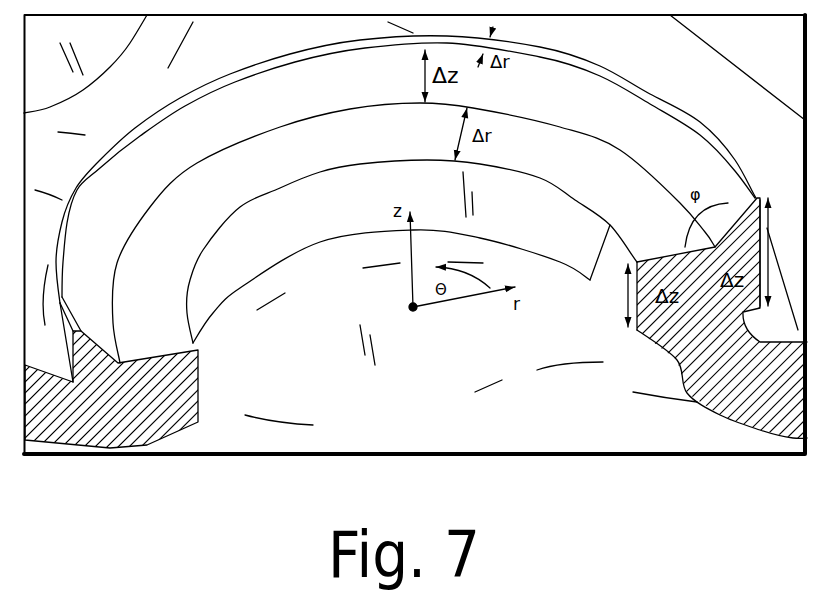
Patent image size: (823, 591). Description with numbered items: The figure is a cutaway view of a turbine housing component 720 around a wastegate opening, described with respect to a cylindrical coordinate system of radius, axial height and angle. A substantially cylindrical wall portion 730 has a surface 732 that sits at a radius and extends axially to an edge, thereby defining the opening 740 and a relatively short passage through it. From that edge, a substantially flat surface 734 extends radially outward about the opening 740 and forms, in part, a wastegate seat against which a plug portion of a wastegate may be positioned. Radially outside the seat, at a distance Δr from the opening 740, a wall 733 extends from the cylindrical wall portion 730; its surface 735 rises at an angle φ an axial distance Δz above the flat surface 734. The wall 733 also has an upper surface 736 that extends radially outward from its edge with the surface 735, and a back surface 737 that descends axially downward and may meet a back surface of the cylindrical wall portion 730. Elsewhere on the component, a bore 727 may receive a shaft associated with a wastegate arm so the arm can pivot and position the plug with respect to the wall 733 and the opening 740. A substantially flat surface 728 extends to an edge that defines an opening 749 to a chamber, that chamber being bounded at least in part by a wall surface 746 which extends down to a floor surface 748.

The turbine housing component 720 is at (773, 401).
The bore 727 is at (110, 45).
The substantially flat surface 728 is at (786, 51).
The substantially cylindrical wall portion 730 is at (171, 401).
The surface 732 is at (298, 235).
The wall 733 is at (406, 177).
The substantially flat surface 734 is at (623, 188).
The surface 735 is at (615, 120).
The upper surface 736 is at (643, 93).
The back surface 737 is at (760, 197).
The opening 740 is at (610, 223).
The wall surface 746 is at (628, 50).
The floor surface 748 is at (693, 367).
The opening 749 is at (755, 80).